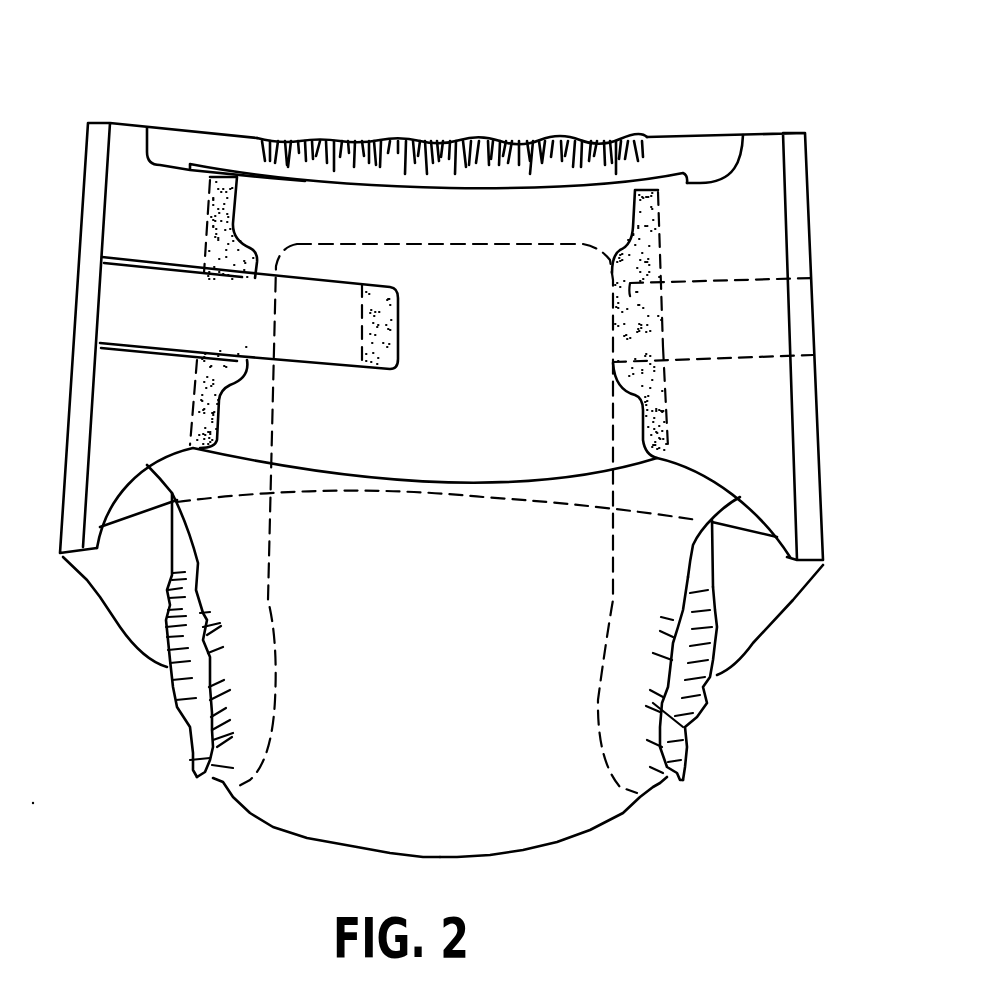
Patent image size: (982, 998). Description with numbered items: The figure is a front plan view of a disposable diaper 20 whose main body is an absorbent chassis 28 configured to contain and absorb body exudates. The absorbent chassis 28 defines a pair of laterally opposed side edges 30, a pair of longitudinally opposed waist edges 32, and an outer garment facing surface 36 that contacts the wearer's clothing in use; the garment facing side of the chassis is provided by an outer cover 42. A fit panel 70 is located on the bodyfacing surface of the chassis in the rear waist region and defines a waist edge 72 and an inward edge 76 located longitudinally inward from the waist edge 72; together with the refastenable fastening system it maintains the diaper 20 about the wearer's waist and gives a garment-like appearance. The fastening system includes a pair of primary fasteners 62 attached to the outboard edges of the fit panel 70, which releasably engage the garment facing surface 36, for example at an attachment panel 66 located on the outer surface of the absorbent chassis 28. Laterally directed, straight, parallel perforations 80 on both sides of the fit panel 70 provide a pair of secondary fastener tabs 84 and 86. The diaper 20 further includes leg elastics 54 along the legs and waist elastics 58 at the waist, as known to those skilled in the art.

The disposable diaper 20 is at (156, 50).
The absorbent chassis 28 is at (297, 808).
The side edges 30 is at (717, 570).
The waist edges 32 is at (457, 103).
The outer garment facing surface 36 is at (505, 830).
The outer cover 42 is at (462, 593).
The leg elastics 54 is at (683, 727).
The waist elastics 58 is at (380, 158).
The primary fasteners 62 is at (237, 207).
The attachment panel 66 is at (497, 481).
The fit panel 70 is at (767, 207).
The waist edge 72 is at (563, 140).
The inward edge 76 is at (146, 515).
The perforations 80 is at (707, 364).
The secondary fastener tab 84 is at (767, 317).
The secondary fastener tab 86 is at (130, 303).